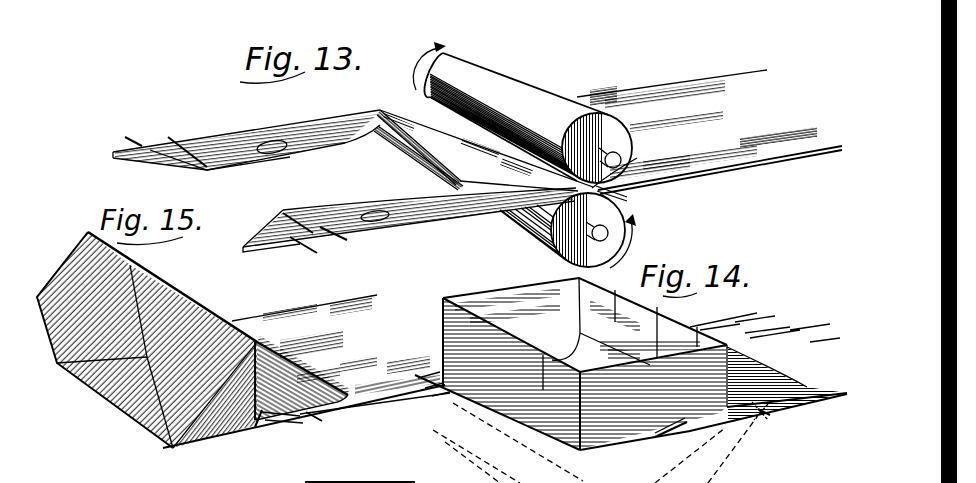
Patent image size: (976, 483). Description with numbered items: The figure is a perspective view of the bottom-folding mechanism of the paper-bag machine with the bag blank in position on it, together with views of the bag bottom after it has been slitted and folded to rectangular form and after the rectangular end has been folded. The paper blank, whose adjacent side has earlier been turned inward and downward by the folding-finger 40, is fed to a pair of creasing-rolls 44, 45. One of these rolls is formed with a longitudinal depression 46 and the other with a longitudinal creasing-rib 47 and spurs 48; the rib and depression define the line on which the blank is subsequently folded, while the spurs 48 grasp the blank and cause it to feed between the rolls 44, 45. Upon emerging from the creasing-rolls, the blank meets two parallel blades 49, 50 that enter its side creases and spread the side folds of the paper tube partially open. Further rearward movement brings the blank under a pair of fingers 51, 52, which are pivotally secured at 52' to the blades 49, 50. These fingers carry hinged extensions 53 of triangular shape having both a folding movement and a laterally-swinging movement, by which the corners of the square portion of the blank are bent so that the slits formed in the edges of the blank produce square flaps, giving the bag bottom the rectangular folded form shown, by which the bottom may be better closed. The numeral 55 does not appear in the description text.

In FIG. 13, the folding-finger 40 is at (412, 195).
In FIG. 13, the creasing-roll 44 is at (523, 78).
In FIG. 13, the creasing-roll 45 is at (622, 213).
In FIG. 13, the longitudinal depression 46 is at (628, 197).
In FIG. 13, the longitudinal creasing-rib 47 is at (623, 166).
In FIG. 13, the spurs 48 is at (447, 110).
In FIG. 15, the blade 49 is at (220, 440).
In FIG. 14, the blade 49 is at (620, 447).
In FIG. 13, the blade 50 is at (362, 90).
In FIG. 13, the finger 51 is at (207, 142).
In FIG. 13, the finger 52 is at (381, 230).
In FIG. 15, the finger 52 is at (330, 430).
In FIG. 14, the finger 52 is at (776, 424).
In FIG. 13, the pivot 52' is at (276, 164).
In FIG. 13, the hinged extensions 53 is at (150, 128).
In FIG. 15, the hinged extensions 53 is at (280, 430).
In FIG. 14, the tab 55 is at (663, 433).